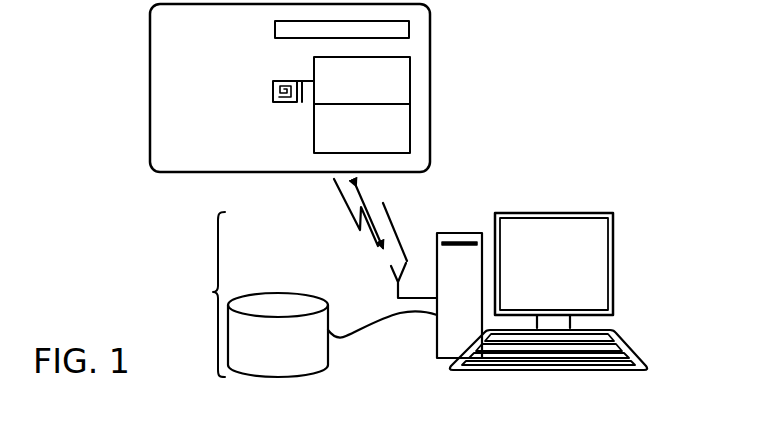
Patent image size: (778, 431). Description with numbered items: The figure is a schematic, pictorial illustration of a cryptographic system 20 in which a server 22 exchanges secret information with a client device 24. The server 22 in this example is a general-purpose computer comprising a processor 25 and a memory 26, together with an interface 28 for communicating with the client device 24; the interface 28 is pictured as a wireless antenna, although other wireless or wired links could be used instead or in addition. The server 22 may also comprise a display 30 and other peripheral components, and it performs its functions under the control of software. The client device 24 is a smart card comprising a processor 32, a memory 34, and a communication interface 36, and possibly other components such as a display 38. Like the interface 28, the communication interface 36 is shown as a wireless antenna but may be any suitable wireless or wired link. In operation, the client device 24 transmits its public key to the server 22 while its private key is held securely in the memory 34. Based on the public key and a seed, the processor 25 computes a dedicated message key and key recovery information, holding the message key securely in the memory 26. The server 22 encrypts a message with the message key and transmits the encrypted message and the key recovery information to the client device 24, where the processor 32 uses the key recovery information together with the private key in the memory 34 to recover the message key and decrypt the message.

The cryptographic system 20 is at (111, 110).
The server 22 is at (203, 294).
The client device 24 is at (430, 50).
The processor 25 is at (445, 360).
The memory 26 is at (329, 355).
The interface 28 is at (391, 267).
The display 30 is at (614, 250).
The processor 32 is at (410, 80).
The memory 34 is at (410, 126).
The communication interface 36 is at (273, 92).
The display 38 is at (274, 31).